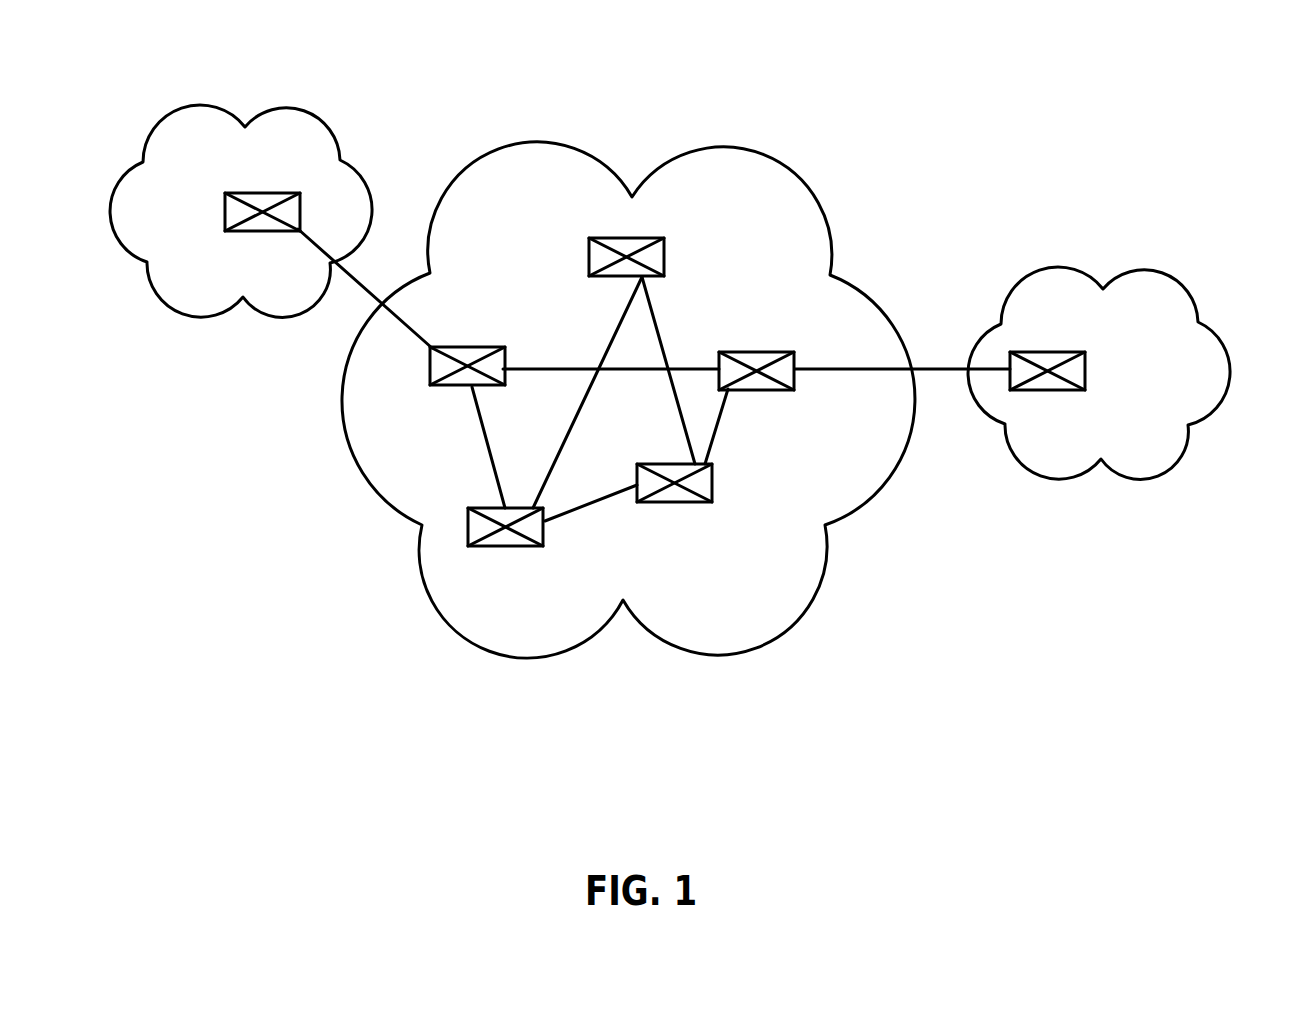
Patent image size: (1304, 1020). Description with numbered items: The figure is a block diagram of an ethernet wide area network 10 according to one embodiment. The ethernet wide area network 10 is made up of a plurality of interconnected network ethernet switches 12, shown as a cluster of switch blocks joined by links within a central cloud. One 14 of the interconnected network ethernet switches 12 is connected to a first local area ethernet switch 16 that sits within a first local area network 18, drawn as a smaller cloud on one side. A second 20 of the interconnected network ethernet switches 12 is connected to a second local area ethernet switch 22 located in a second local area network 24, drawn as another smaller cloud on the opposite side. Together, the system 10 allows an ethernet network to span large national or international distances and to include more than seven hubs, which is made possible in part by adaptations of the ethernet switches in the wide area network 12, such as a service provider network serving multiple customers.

The ethernet wide area network 10 is at (785, 34).
The interconnected network ethernet switches 12 is at (785, 177).
The one of the interconnected network ethernet switches 14 is at (753, 352).
The first local area ethernet switch 16 is at (1046, 392).
The first local area network 18 is at (1222, 340).
The second of the interconnected network ethernet switches 20 is at (487, 347).
The second local area ethernet switch 22 is at (250, 232).
The second local area network 24 is at (365, 182).